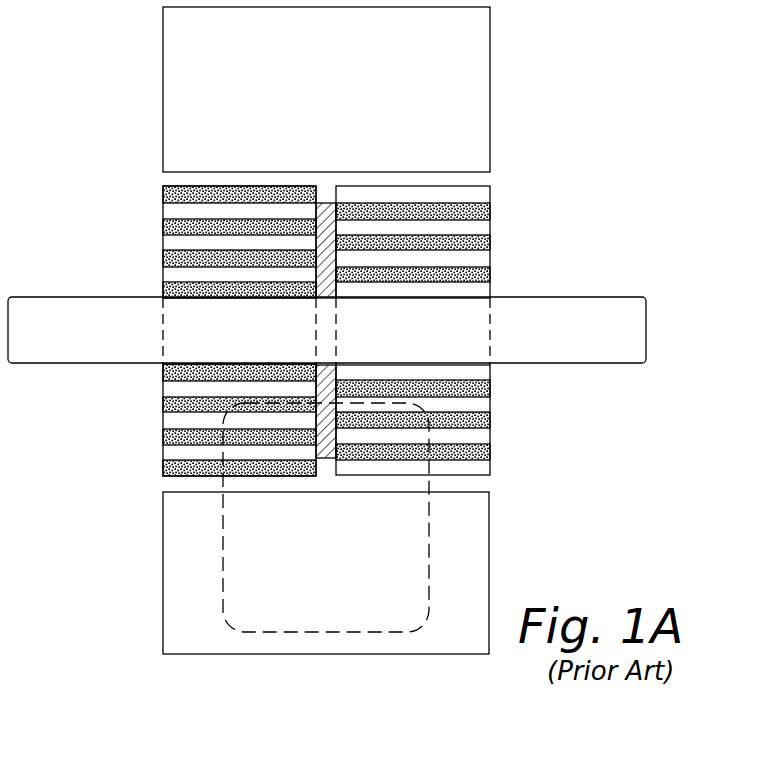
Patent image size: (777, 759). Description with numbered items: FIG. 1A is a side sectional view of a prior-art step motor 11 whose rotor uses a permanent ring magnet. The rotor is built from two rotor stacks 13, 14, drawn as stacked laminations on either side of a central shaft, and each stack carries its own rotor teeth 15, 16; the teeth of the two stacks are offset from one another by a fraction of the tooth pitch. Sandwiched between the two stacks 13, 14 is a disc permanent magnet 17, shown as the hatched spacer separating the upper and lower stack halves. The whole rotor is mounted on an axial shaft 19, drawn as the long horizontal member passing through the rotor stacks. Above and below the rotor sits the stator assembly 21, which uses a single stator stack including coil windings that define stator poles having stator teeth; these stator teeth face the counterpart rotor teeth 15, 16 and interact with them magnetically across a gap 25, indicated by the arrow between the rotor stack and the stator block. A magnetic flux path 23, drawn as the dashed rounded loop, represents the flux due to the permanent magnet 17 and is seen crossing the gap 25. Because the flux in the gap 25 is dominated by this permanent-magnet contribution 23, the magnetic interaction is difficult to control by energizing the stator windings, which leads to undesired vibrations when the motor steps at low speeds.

The clutch assembly 11 is at (100, 58).
The rotor stack 13 is at (163, 385).
The rotor stack 14 is at (487, 400).
The rotor teeth 15 is at (163, 195).
The rotor teeth 16 is at (490, 212).
The disc permanent magnet 17 is at (323, 203).
The axial shaft 19 is at (45, 297).
The stator assembly 21 is at (163, 550).
The magnetic flux path 23 is at (429, 535).
The gap 25 is at (172, 483).